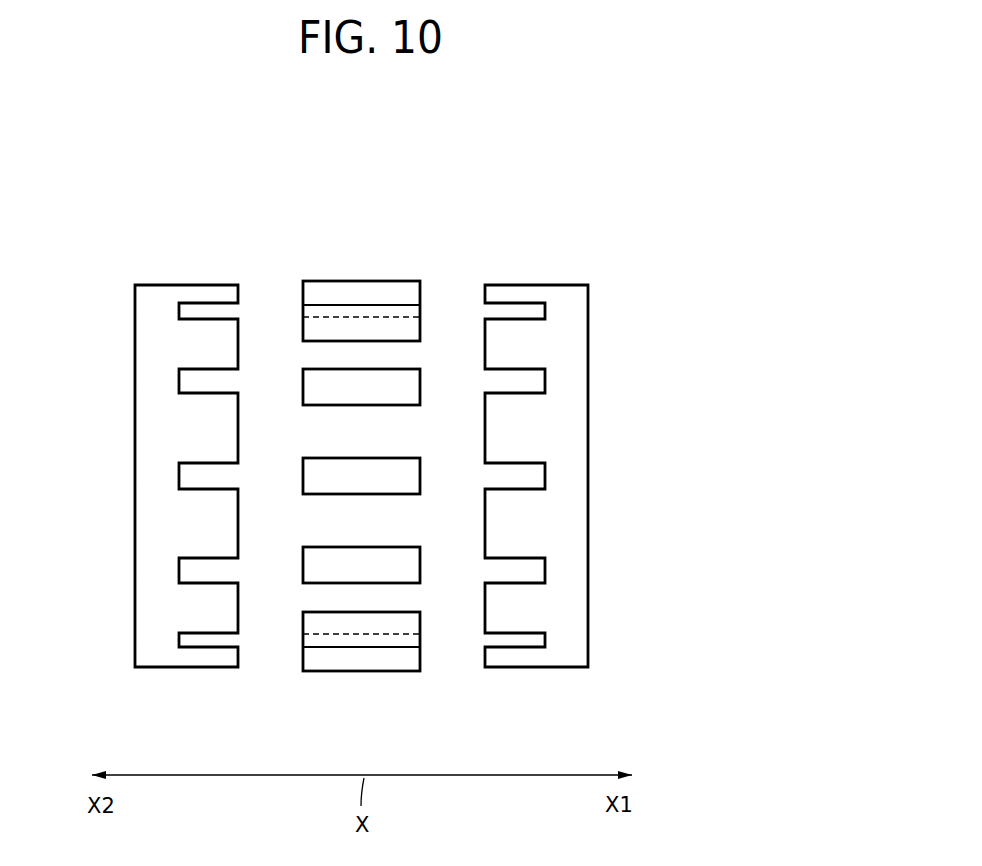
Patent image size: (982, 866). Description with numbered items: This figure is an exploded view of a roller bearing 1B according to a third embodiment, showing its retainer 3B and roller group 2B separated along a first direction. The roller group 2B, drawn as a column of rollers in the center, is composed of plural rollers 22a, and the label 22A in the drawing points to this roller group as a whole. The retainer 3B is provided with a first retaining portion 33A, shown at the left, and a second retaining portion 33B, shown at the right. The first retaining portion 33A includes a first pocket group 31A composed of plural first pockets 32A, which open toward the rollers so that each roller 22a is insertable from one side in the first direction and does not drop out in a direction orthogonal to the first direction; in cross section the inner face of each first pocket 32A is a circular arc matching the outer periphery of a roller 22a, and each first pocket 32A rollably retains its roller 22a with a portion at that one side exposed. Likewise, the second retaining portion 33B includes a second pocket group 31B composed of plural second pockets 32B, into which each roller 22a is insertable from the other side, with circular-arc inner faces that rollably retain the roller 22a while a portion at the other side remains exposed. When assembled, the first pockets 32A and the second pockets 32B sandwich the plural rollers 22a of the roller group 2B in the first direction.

The roller bearing 1B is at (779, 122).
The roller group 2B is at (418, 155).
The retainer 3B is at (627, 155).
The terminal stack 22A is at (335, 248).
The roller 22a is at (395, 282).
The first pocket group 31A is at (96, 567).
The second pocket group 31B is at (626, 567).
The first pocket 32A is at (183, 381).
The second pocket 32B is at (542, 381).
The first retaining portion 33A is at (183, 248).
The second retaining portion 33B is at (535, 248).